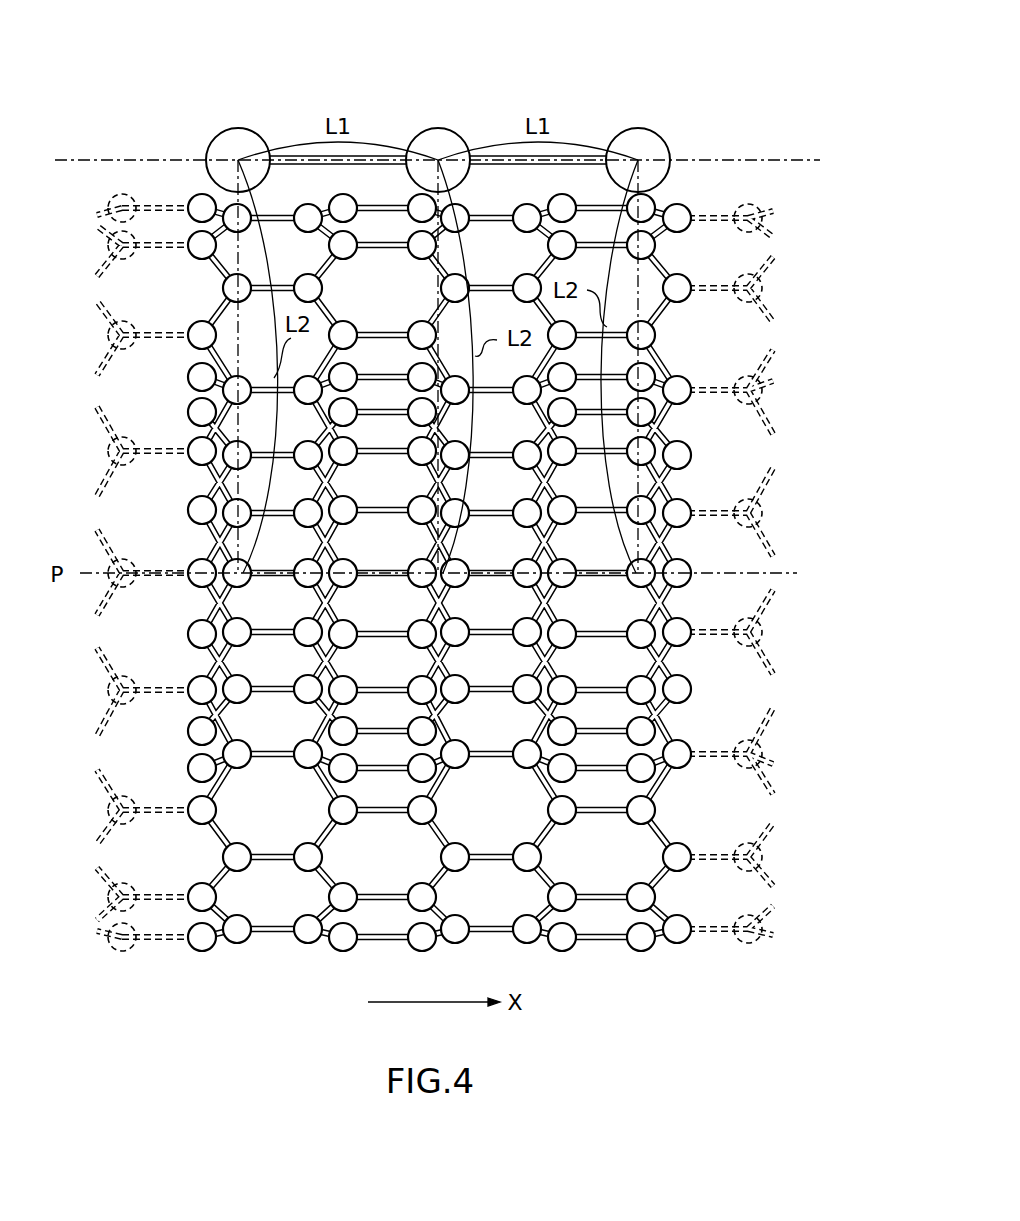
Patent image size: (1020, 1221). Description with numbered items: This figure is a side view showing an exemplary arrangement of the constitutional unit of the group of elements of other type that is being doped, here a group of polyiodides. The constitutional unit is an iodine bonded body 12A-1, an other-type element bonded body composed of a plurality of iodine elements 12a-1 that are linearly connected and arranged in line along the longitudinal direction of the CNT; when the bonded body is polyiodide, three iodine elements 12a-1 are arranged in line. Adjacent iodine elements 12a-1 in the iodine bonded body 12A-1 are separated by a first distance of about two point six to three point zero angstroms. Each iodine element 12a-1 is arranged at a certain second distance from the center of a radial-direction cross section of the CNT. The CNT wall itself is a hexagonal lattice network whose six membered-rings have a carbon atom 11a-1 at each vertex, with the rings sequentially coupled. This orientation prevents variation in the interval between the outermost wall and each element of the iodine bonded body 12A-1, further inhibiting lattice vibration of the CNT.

The iodine bonded body 12A-1 is at (438, 291).
The iodine element 12a-1 is at (239, 160).
The carbon atom 11a-1 is at (652, 206).